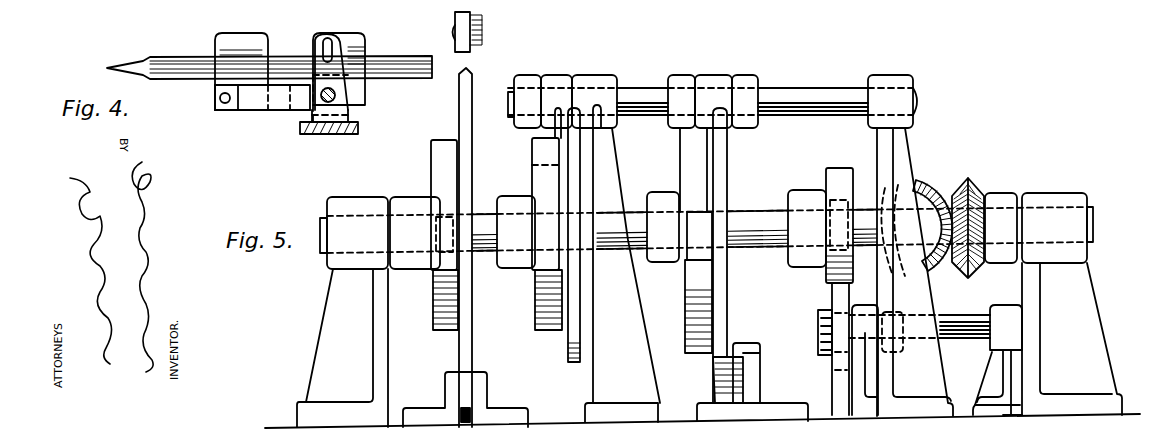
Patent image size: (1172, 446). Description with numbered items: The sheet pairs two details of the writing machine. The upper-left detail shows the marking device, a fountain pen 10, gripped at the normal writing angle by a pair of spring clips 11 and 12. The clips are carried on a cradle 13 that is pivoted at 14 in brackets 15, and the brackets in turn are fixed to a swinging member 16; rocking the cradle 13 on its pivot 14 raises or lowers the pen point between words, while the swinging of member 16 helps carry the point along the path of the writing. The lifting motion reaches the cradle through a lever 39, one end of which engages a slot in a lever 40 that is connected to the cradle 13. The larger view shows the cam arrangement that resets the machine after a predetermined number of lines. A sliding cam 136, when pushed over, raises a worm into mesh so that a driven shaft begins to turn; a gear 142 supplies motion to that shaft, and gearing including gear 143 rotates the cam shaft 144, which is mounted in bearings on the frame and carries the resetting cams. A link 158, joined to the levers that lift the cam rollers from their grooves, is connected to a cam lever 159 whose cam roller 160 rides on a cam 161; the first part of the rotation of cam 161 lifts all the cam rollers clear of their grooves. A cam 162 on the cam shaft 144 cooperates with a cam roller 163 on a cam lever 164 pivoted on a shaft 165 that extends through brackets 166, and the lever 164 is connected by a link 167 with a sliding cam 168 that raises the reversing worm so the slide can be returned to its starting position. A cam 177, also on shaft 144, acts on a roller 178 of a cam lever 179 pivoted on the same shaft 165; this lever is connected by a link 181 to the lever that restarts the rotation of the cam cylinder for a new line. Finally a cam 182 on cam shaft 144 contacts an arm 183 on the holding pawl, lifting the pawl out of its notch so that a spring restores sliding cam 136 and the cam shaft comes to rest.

In FIG. 4, the fountain pen 10 is at (200, 64).
In FIG. 4, the spring clip 11 is at (352, 37).
In FIG. 4, the spring clip 12 is at (252, 36).
In FIG. 4, the cradle 13 is at (290, 100).
In FIG. 4, the pivot 14 is at (333, 95).
In FIG. 4, the brackets 15 is at (304, 130).
In FIG. 4, the swinging member 16 is at (334, 134).
In FIG. 4, the lever 39 is at (293, 19).
In FIG. 4, the lever 40 is at (340, 63).
In FIG. 5, the sliding cam 136 is at (832, 383).
In FIG. 5, the gear 142 is at (935, 178).
In FIG. 5, the gear 143 is at (976, 192).
In FIG. 5, the cam shaft 144 is at (322, 222).
In FIG. 5, the link 158 is at (483, 17).
In FIG. 5, the cam lever 159 is at (468, 88).
In FIG. 5, the cam roller 160 is at (462, 210).
In FIG. 5, the cam 161 is at (431, 166).
In FIG. 5, the cam 162 is at (690, 158).
In FIG. 5, the cam roller 163 is at (702, 217).
In FIG. 5, the cam lever 164 is at (727, 267).
In FIG. 5, the shaft 165 is at (633, 96).
In FIG. 5, the brackets 166 is at (635, 365).
In FIG. 5, the link 167 is at (750, 350).
In FIG. 5, the sliding cam 168 is at (755, 378).
In FIG. 5, the cam 177 is at (535, 152).
In FIG. 5, the roller 178 is at (532, 272).
In FIG. 5, the cam lever 179 is at (562, 330).
In FIG. 5, the link 181 is at (575, 362).
In FIG. 5, the cam 182 is at (846, 160).
In FIG. 5, the arm 183 is at (830, 306).